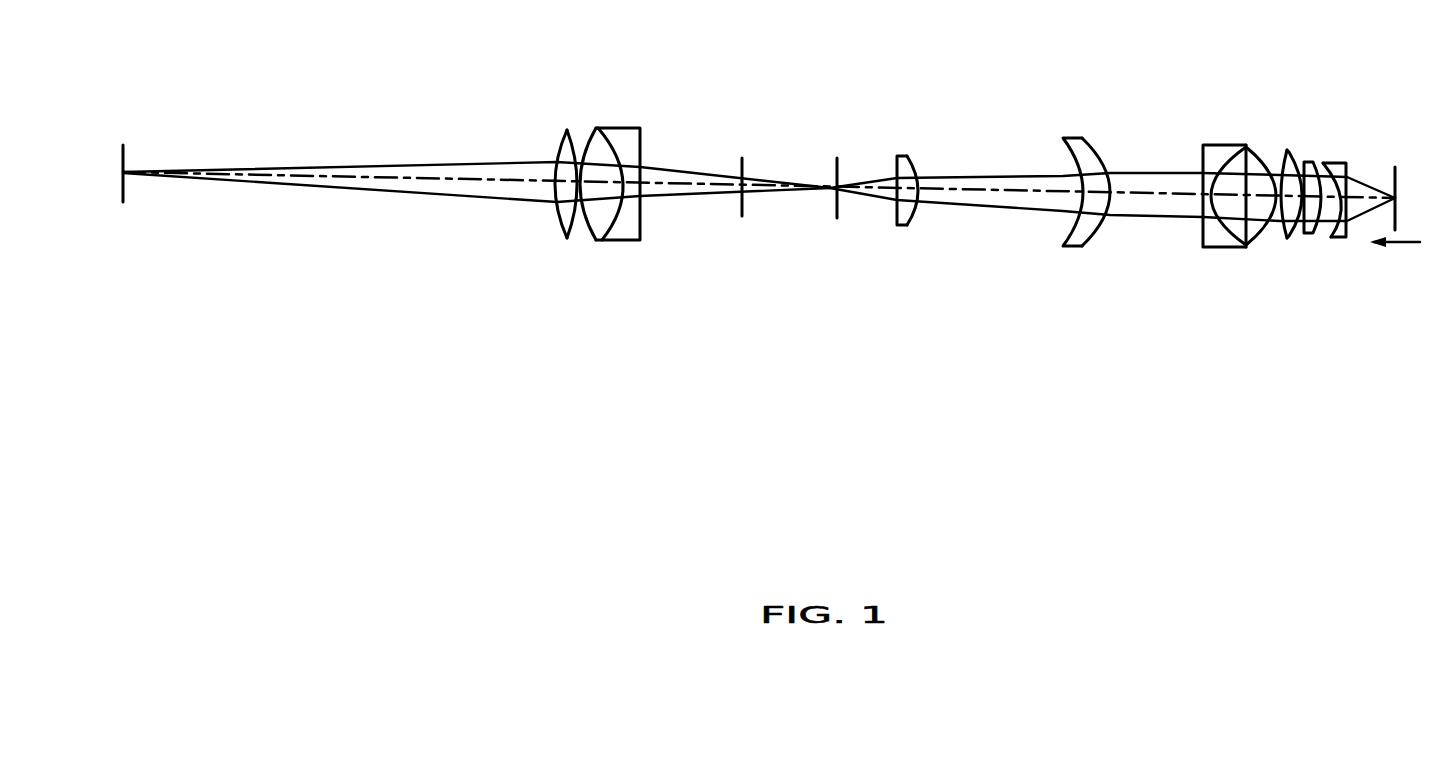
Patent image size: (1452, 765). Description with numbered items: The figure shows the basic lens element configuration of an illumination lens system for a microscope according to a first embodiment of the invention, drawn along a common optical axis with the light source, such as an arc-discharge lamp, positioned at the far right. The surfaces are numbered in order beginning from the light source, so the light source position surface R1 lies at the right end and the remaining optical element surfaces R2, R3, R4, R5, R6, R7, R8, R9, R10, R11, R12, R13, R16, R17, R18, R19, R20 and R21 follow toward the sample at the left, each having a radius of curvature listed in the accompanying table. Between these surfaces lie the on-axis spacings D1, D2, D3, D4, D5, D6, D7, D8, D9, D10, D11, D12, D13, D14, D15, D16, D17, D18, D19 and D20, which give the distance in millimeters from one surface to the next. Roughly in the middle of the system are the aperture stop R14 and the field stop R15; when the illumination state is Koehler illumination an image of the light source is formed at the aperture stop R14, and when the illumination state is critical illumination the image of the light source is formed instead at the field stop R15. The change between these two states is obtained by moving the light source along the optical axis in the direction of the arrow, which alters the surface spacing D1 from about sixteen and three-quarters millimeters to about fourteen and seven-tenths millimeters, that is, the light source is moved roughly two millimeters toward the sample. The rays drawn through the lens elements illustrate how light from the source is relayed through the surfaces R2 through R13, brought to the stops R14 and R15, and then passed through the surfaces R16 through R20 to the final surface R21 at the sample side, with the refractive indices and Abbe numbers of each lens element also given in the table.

The light source position surface R1 is at (1395, 167).
The optical element surface R2 is at (1347, 163).
The optical element surface R3 is at (1323, 160).
The optical element surface R4 is at (1310, 155).
The optical element surface R5 is at (1295, 145).
The optical element surface R6 is at (1285, 145).
The optical element surface R7 is at (1258, 147).
The optical element surface R8 is at (1245, 147).
The optical element surface R9 is at (1200, 158).
The optical element surface R10 is at (1105, 155).
The optical element surface R11 is at (1065, 148).
The optical element surface R12 is at (917, 156).
The optical element surface R13 is at (895, 153).
The aperture stop R14 is at (837, 158).
The field stop R15 is at (742, 158).
The optical element surface R16 is at (641, 140).
The optical element surface R17 is at (612, 130).
The optical element surface R18 is at (588, 130).
The optical element surface R19 is at (570, 143).
The optical element surface R20 is at (560, 138).
The optical element surface R21 is at (123, 145).
The surface spacing D1 is at (1353, 223).
The on-axis spacing D2 is at (1335, 230).
The on-axis spacing D3 is at (1315, 230).
The on-axis spacing D4 is at (1305, 237).
The on-axis spacing D5 is at (1282, 233).
The on-axis spacing D6 is at (1257, 212).
The on-axis spacing D7 is at (1233, 200).
The on-axis spacing D8 is at (1203, 207).
The on-axis spacing D9 is at (1148, 197).
The on-axis spacing D10 is at (1107, 237).
The on-axis spacing D11 is at (985, 193).
The on-axis spacing D12 is at (917, 217).
The on-axis spacing D13 is at (883, 198).
The on-axis spacing D14 is at (762, 190).
The on-axis spacing D15 is at (673, 187).
The on-axis spacing D16 is at (632, 187).
The on-axis spacing D17 is at (613, 193).
The on-axis spacing D18 is at (577, 212).
The on-axis spacing D19 is at (560, 207).
The on-axis spacing D20 is at (327, 178).